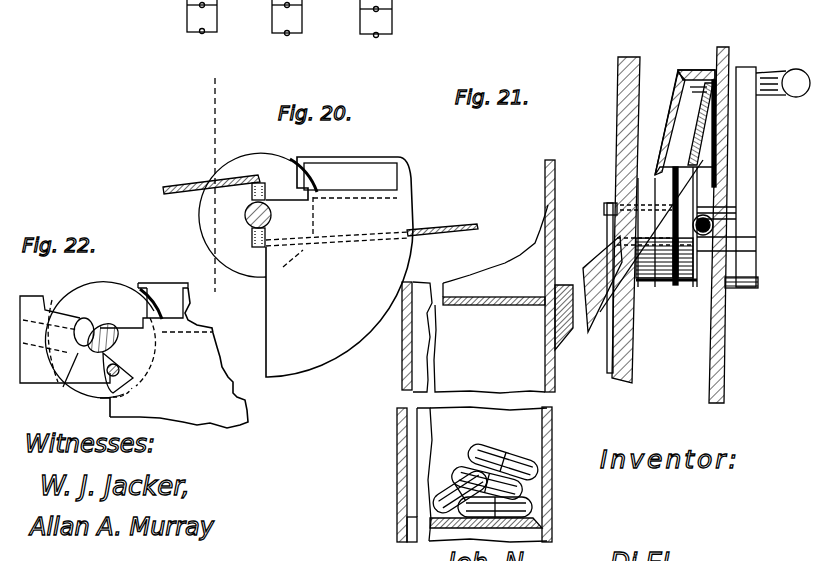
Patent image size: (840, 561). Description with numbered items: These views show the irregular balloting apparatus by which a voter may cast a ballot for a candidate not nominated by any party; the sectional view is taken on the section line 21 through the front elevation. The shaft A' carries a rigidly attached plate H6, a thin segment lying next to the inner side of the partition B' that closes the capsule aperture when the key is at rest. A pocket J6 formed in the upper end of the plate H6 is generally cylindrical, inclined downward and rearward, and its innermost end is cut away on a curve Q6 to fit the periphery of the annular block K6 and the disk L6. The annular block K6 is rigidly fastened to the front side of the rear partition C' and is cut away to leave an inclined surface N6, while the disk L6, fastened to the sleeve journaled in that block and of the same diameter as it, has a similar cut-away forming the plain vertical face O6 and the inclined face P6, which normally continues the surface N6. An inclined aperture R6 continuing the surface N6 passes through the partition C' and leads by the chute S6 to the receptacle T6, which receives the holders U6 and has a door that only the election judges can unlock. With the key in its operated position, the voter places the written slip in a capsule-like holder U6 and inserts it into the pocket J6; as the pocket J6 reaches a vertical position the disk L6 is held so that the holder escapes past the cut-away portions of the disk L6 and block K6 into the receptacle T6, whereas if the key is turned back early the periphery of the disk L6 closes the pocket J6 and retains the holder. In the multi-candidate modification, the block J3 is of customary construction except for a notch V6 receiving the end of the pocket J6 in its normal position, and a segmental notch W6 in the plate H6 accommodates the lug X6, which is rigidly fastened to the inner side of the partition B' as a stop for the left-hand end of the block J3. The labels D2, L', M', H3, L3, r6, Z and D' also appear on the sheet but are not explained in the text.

In FIG. 20, the fragment of adjacent figure D2 is at (303, 14).
In FIG. 20, the section line 21 is at (240, 73).
In FIG. 20, the disk L6 is at (247, 159).
In FIG. 22, the disk L6 is at (101, 340).
In FIG. 21, the disk L6 is at (683, 283).
In FIG. 20, the curve Q6 is at (315, 195).
In FIG. 22, the curve Q6 is at (152, 288).
In FIG. 20, the plate H6 is at (339, 267).
In FIG. 22, the plate H6 is at (146, 400).
In FIG. 21, the plate H6 is at (717, 187).
In FIG. 20, the pocket J6 is at (350, 199).
In FIG. 22, the pocket J6 is at (182, 307).
In FIG. 21, the pocket J6 is at (685, 128).
In FIG. 20, the lever L' is at (320, 199).
In FIG. 21, the lever L' is at (736, 237).
In FIG. 20, the shaft A' is at (244, 205).
In FIG. 21, the shaft A' is at (735, 242).
In FIG. 20, the bracket M' is at (242, 237).
In FIG. 21, the bracket M' is at (740, 220).
In FIG. 22, the notch V6 is at (50, 303).
In FIG. 22, the eccentric H3 is at (92, 330).
In FIG. 22, the lug X6 is at (122, 368).
In FIG. 22, the block J3 is at (65, 339).
In FIG. 22, the link L3 is at (60, 378).
In FIG. 22, the segmental notch W6 is at (124, 378).
In FIG. 21, the receptacle T6 is at (485, 351).
In FIG. 21, the chute S6 is at (553, 284).
In FIG. 21, the holder U6 is at (494, 452).
In FIG. 21, the rear partition C' is at (626, 205).
In FIG. 21, the inclined aperture R6 is at (622, 257).
In FIG. 21, the annular block K6 is at (650, 283).
In FIG. 21, the inclined surface N6 is at (638, 197).
In FIG. 21, the pin r6 is at (634, 234).
In FIG. 21, the partition B' is at (730, 225).
In FIG. 21, the handle Z is at (745, 126).
In FIG. 21, the plain vertical face O6 is at (690, 175).
In FIG. 21, the inclined face P6 is at (736, 205).
In FIG. 21, the base D' is at (753, 281).